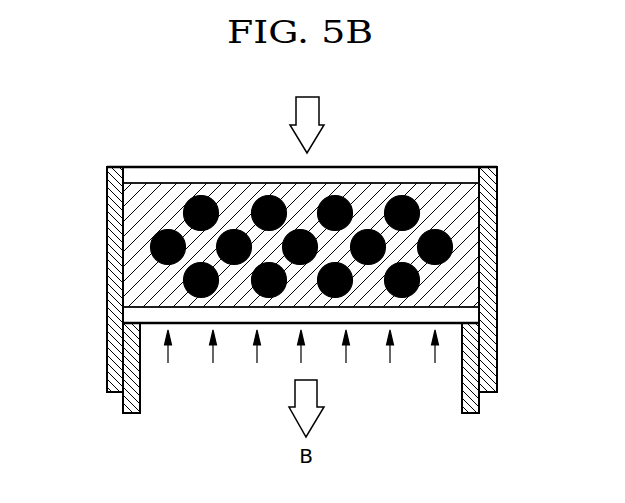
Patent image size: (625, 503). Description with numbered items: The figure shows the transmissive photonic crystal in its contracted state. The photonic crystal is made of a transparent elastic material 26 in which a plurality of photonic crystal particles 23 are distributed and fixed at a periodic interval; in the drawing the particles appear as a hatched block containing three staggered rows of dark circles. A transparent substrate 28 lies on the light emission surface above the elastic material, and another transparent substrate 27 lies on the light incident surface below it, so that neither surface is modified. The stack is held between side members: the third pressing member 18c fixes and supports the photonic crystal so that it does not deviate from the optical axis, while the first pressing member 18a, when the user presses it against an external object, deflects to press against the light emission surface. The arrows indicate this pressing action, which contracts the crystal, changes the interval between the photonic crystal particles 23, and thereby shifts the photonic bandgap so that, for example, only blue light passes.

The transparent substrate 28 is at (137, 181).
The photonic crystal particles 23 is at (138, 243).
The transparent elastic material 26 is at (138, 277).
The transparent substrate 27 is at (135, 317).
The third pressing member 18c is at (482, 342).
The first pressing member 18a is at (468, 376).